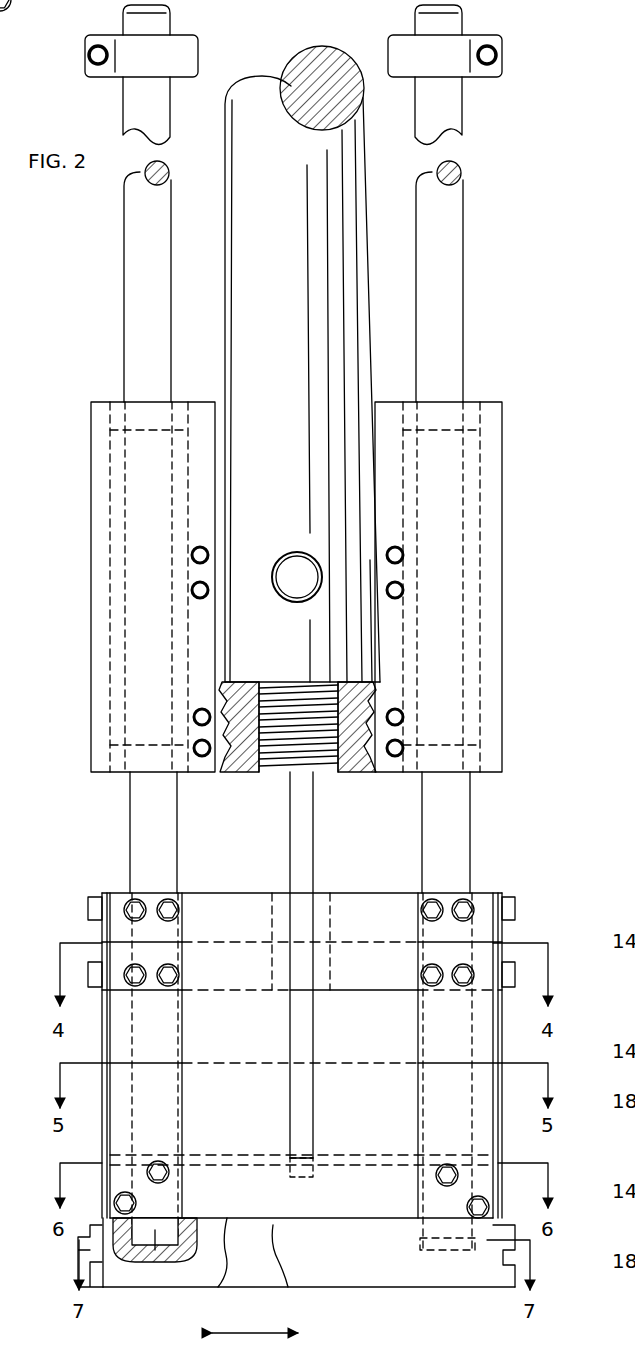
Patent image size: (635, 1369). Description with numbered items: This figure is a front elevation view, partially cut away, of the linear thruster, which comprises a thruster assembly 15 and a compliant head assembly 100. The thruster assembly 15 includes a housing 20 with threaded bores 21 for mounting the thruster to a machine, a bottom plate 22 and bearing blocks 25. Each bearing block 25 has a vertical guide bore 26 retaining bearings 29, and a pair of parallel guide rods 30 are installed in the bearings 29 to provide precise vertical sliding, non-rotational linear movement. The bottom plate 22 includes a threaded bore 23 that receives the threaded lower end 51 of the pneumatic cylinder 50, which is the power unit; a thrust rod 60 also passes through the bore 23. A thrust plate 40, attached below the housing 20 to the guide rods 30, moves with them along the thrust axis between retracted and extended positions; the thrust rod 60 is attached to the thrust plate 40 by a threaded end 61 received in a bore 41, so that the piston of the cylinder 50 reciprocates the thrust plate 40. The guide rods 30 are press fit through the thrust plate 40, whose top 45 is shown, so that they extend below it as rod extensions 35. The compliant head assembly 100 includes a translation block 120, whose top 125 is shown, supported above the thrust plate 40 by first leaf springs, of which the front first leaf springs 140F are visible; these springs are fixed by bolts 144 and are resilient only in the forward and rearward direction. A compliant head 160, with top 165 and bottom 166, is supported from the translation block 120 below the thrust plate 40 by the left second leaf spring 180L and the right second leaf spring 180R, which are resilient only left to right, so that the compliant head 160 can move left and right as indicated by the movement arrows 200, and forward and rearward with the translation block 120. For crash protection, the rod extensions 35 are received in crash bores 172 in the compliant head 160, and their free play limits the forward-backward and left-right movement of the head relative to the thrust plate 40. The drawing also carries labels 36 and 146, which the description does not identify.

The thruster assembly 15 is at (522, 666).
The housing 20 is at (88, 650).
The threaded bores 21 is at (190, 555).
The bottom plate 22 is at (240, 780).
The threaded bore 23 is at (355, 780).
The bearing blocks 25 is at (85, 498).
The vertical guide bore 26 is at (110, 525).
The bearings 29 is at (130, 412).
The guide rods 30 is at (124, 245).
The extensions of guide rods 35 is at (160, 1262).
The rod end fittings 36 is at (95, 38).
The thrust plate 40 is at (377, 1105).
The bore 41 is at (333, 1135).
The top 45 is at (412, 1153).
The pneumatic cylinder 50 is at (252, 178).
The threaded lower end 51 is at (290, 682).
The thrust rod 60 is at (305, 848).
The threaded end 61 is at (290, 1160).
The compliant head assembly 100 is at (545, 885).
The translation block 120 is at (248, 880).
The top 125 is at (388, 893).
The front first leaf springs 140F is at (102, 1045).
The bolts 144 is at (460, 968).
The bushing 146 is at (288, 1287).
The compliant head 160 is at (340, 1287).
The top 165 is at (220, 1287).
The bottom 166 is at (385, 1287).
The crash bore 172 is at (110, 1240).
The left second leaf spring 180L is at (102, 1147).
The right second leaf spring 180R is at (500, 1145).
The movement arrows 200 is at (290, 1333).